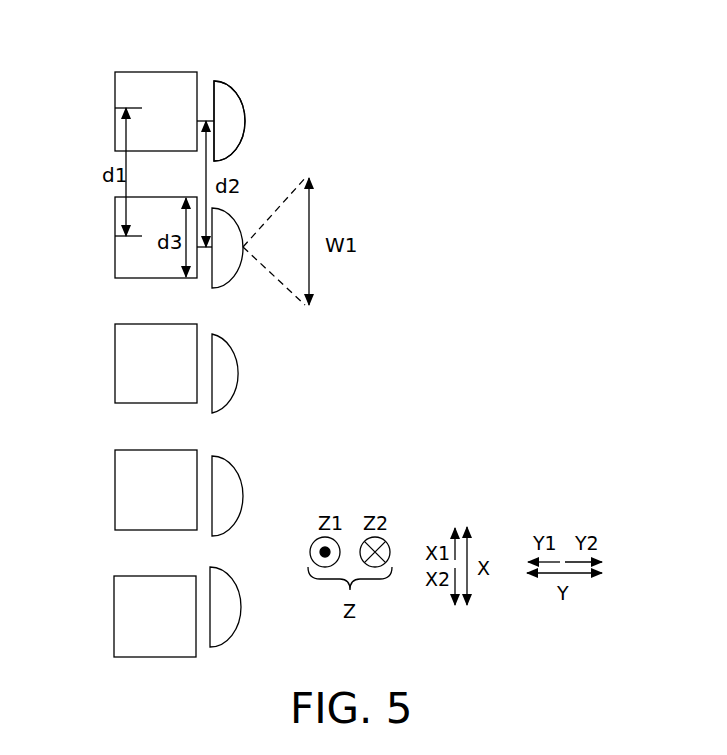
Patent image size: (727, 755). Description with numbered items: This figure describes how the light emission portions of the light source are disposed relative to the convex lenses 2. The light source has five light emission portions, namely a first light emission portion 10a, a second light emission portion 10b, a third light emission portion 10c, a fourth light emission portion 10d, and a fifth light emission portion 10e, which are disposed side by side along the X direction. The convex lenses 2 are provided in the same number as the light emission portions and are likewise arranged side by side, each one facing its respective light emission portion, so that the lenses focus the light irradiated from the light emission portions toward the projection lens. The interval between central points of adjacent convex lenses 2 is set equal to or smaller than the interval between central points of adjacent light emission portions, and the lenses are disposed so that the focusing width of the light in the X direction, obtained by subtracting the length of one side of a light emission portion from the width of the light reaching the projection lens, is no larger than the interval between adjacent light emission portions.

The convex lenses 2 is at (221, 62).
The first light emission portion 10a is at (167, 96).
The second light emission portion 10b is at (154, 267).
The third light emission portion 10c is at (166, 370).
The fourth light emission portion 10d is at (157, 485).
The fifth light emission portion 10e is at (155, 610).